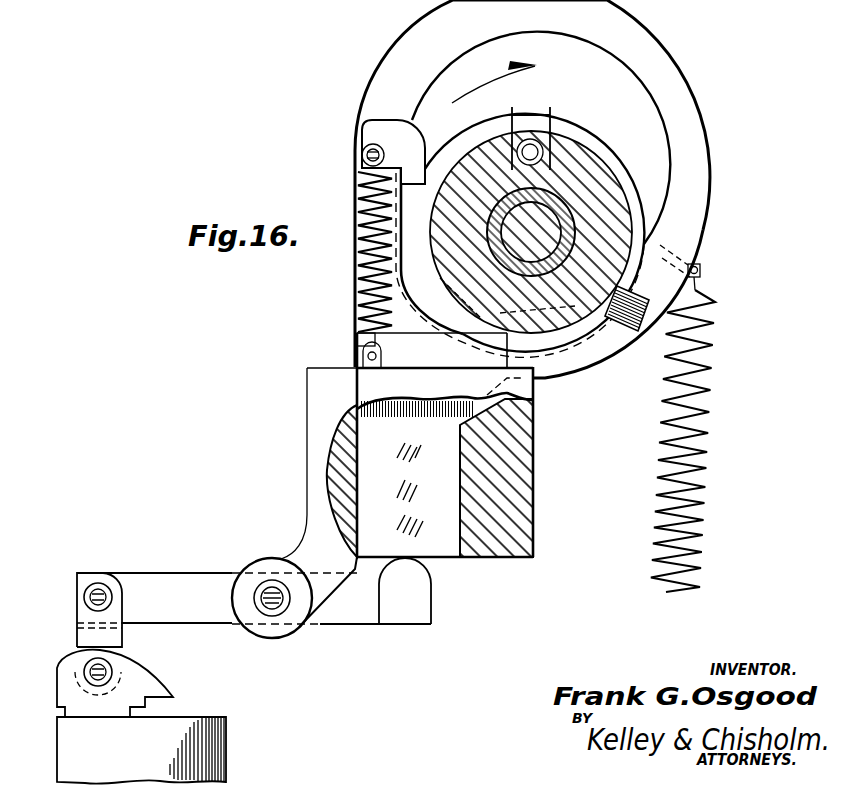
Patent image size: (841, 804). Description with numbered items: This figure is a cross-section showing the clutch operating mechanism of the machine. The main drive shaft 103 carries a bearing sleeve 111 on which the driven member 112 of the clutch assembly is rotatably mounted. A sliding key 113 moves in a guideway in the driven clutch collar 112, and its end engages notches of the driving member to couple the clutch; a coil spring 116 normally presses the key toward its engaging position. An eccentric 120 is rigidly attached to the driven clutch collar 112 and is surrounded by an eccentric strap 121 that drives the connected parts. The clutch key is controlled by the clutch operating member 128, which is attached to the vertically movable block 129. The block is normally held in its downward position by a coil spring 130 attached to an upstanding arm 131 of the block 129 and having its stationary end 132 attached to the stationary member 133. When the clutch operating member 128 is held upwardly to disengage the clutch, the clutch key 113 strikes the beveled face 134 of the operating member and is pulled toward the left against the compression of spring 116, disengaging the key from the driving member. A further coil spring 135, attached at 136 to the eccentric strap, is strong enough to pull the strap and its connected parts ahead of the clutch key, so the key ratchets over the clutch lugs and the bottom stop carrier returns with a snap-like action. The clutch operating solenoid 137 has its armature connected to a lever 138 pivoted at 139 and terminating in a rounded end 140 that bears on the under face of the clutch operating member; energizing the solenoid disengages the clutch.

The main drive shaft 103 is at (607, 210).
The bearing sleeve 111 is at (556, 238).
The driven member of the clutch assembly 112 is at (562, 204).
The sliding key 113 is at (526, 124).
The coil spring 116 is at (541, 152).
The eccentric 120 is at (635, 107).
The eccentric strap 121 is at (684, 115).
The clutch operating member 128 is at (585, 355).
The vertically movable block 129 is at (438, 533).
The coil spring 130 is at (362, 265).
The upstanding arm 131 is at (385, 134).
The stationary end 132 is at (356, 349).
The stationary member 133 is at (322, 408).
The beveled face 134 is at (637, 308).
The coil spring 135 is at (708, 430).
The attachment point of coil spring 136 is at (700, 266).
The clutch operating solenoid 137 is at (213, 758).
The lever 138 is at (180, 587).
The pivot 139 is at (272, 602).
The rounded end 140 is at (410, 585).